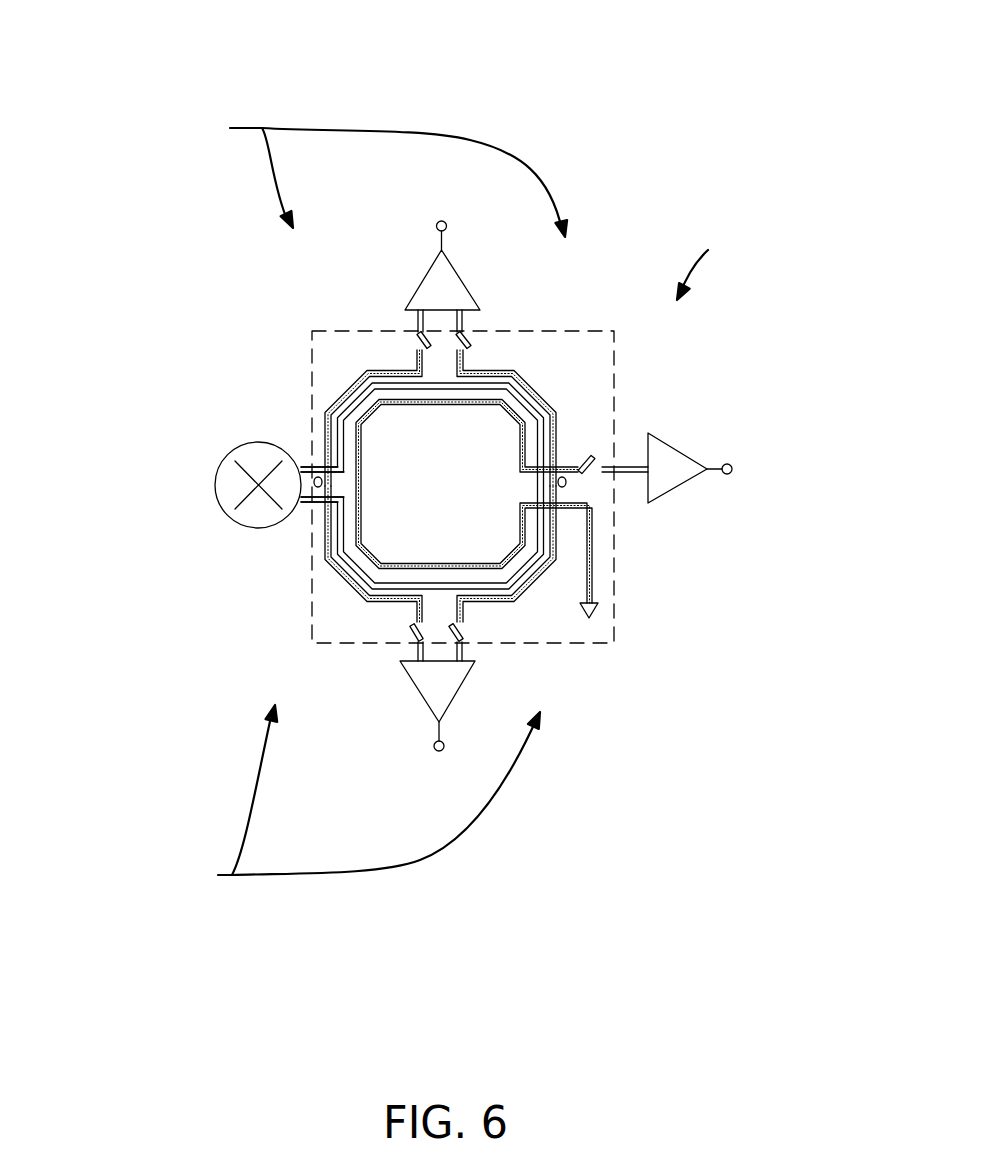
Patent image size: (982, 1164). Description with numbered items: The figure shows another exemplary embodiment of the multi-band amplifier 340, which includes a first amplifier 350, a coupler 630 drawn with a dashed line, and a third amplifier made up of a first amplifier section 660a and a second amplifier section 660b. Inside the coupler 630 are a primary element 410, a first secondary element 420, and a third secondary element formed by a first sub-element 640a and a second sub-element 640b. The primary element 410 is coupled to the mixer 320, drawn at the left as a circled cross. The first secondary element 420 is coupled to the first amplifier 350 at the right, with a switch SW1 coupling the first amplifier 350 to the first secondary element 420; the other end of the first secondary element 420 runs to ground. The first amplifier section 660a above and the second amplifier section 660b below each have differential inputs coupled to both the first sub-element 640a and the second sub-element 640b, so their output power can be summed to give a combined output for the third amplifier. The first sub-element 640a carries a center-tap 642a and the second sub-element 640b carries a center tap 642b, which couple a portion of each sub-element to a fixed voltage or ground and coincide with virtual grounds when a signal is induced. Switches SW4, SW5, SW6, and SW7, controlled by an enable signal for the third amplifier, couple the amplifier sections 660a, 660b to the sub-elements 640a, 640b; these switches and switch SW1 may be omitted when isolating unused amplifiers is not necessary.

The multi-band amplifier 340 is at (573, 28).
The coupler 630 is at (578, 331).
The first sub-element 640a is at (365, 373).
The second sub-element 640b is at (532, 590).
The center-tap 642a is at (318, 488).
The center tap 642b is at (565, 483).
The primary element 410 is at (307, 463).
The mixer 320 is at (215, 480).
The first amplifier 350 is at (688, 484).
The first secondary element 420 is at (592, 585).
The first amplifier section 660a is at (452, 262).
The second amplifier section 660b is at (422, 697).
The switch SW1 is at (593, 457).
The switch SW4 is at (413, 342).
The switch SW5 is at (468, 333).
The switch SW6 is at (412, 628).
The switch SW7 is at (458, 627).